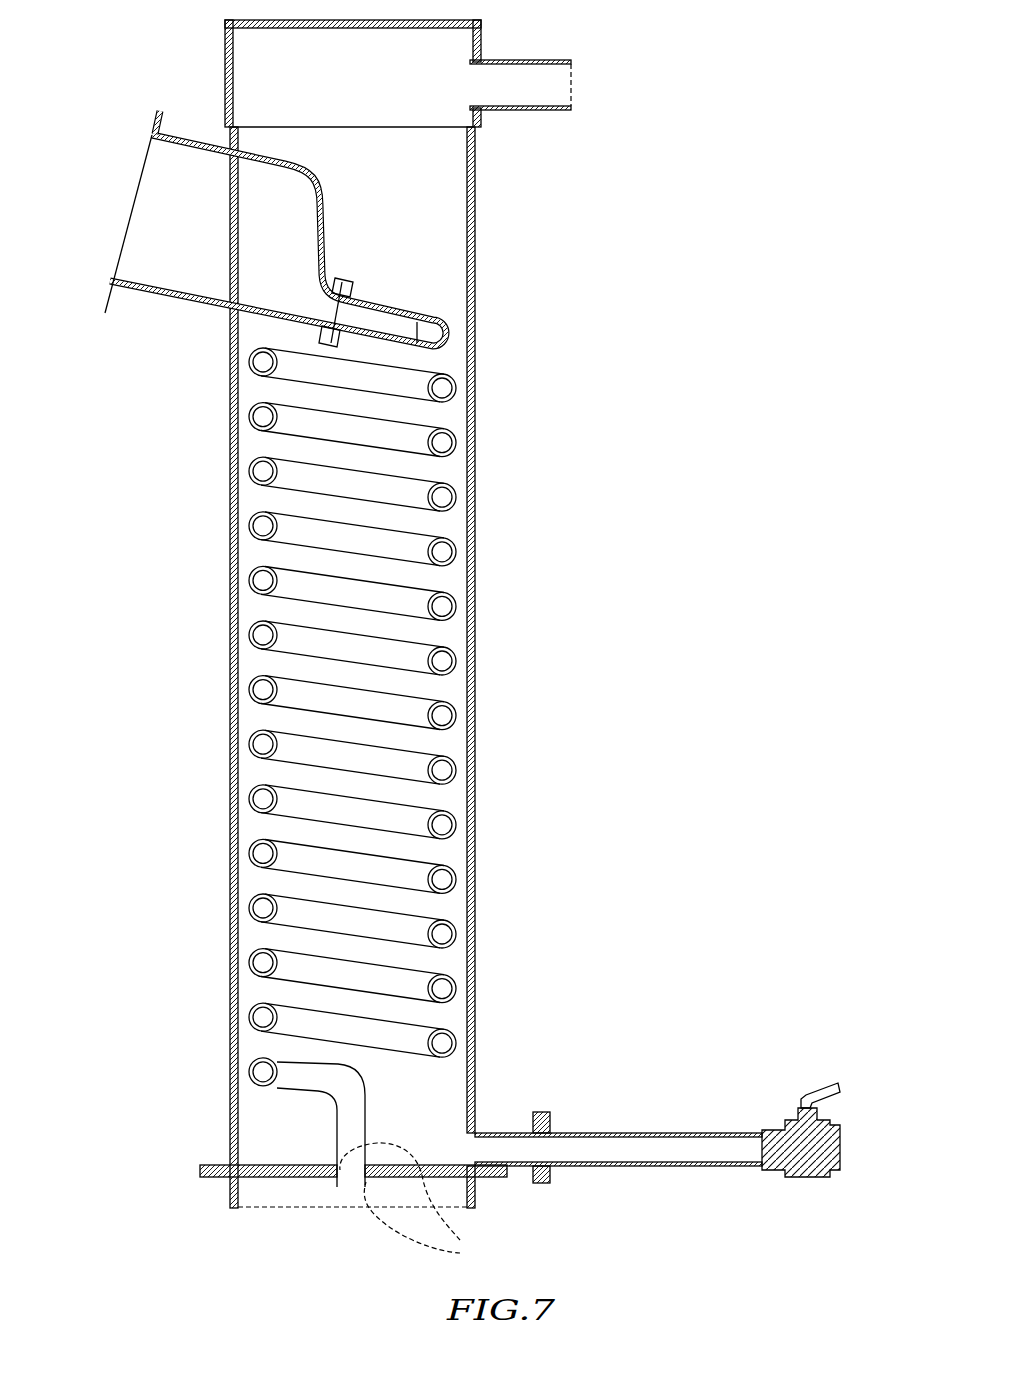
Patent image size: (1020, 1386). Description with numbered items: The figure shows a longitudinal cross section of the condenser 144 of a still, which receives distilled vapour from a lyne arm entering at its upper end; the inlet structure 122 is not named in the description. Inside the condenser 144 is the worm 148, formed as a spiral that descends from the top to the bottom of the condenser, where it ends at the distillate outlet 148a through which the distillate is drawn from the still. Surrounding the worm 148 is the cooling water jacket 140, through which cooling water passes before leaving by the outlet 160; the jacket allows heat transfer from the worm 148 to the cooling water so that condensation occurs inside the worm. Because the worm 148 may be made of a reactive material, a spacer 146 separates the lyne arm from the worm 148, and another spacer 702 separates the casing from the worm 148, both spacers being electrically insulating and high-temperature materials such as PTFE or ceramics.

The hopper 122 is at (197, 137).
The cooling water jacket 140 is at (542, 88).
The condenser 144 is at (427, 193).
The spacer 146 is at (348, 278).
The worm 148 is at (382, 420).
The distillate outlet 148a is at (353, 1180).
The outlet 160 is at (688, 1143).
The spacer 702 is at (428, 1205).